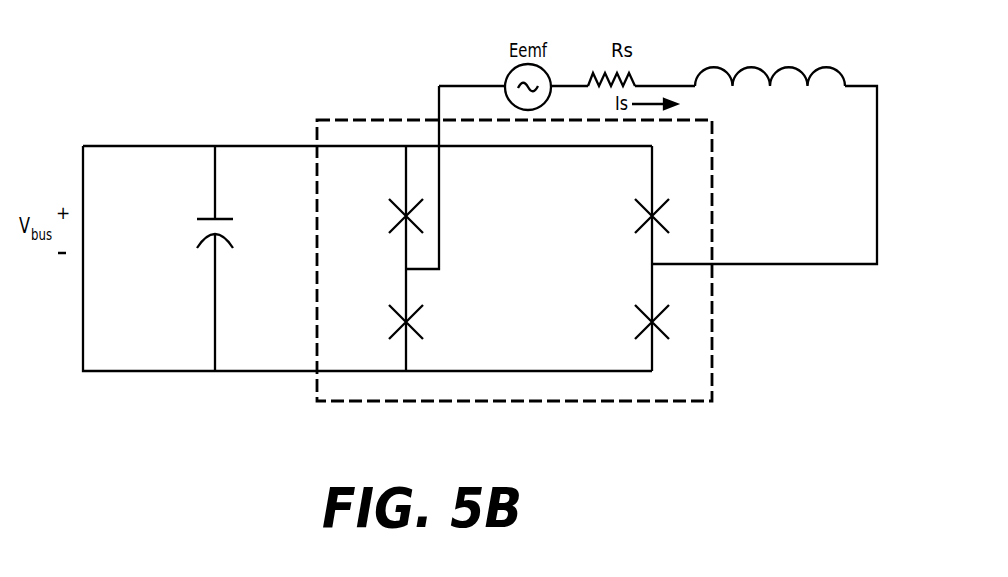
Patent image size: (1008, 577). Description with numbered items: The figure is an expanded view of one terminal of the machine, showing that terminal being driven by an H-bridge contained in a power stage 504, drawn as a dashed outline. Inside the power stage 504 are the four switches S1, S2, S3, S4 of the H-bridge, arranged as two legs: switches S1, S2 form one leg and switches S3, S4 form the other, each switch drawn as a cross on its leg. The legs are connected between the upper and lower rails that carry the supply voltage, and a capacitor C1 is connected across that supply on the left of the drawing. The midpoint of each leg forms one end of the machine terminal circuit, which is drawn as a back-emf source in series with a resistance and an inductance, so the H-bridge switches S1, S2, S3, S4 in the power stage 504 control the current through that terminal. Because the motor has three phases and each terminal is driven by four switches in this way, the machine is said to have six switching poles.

The power stage 504 is at (712, 346).
The capacitor C1 is at (229, 258).
The switch S1 is at (394, 216).
The switch S2 is at (394, 322).
The switch S3 is at (640, 216).
The switch S4 is at (640, 322).